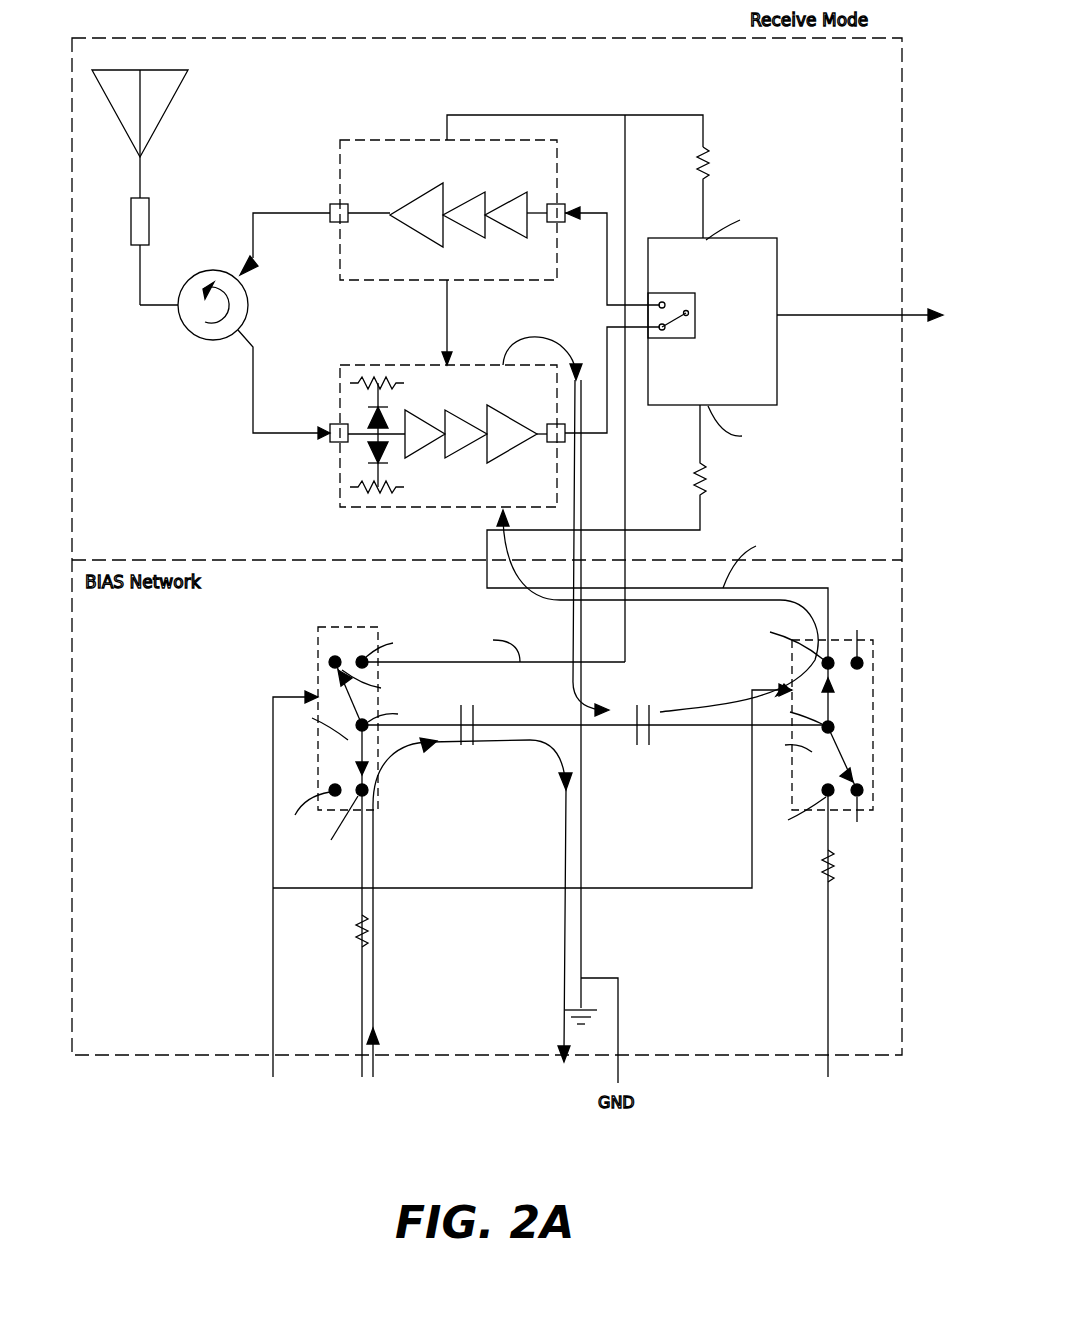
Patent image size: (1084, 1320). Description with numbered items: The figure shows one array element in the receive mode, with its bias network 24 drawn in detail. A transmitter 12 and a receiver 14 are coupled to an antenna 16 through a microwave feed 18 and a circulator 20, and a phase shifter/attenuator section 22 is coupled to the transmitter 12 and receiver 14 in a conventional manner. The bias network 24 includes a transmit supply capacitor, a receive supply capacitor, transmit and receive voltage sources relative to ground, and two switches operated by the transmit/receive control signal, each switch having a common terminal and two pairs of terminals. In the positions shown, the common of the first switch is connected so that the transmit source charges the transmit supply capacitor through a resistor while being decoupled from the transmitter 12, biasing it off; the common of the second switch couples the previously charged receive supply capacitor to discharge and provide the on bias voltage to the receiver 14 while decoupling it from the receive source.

The transmitter 12 is at (543, 475).
The receiver 14 is at (545, 275).
The antenna 16 is at (160, 108).
The microwave feed 18 is at (149, 210).
The circulator 20 is at (248, 306).
The phase shifter/attenuator section 22 is at (750, 340).
The bias network 24 is at (166, 621).